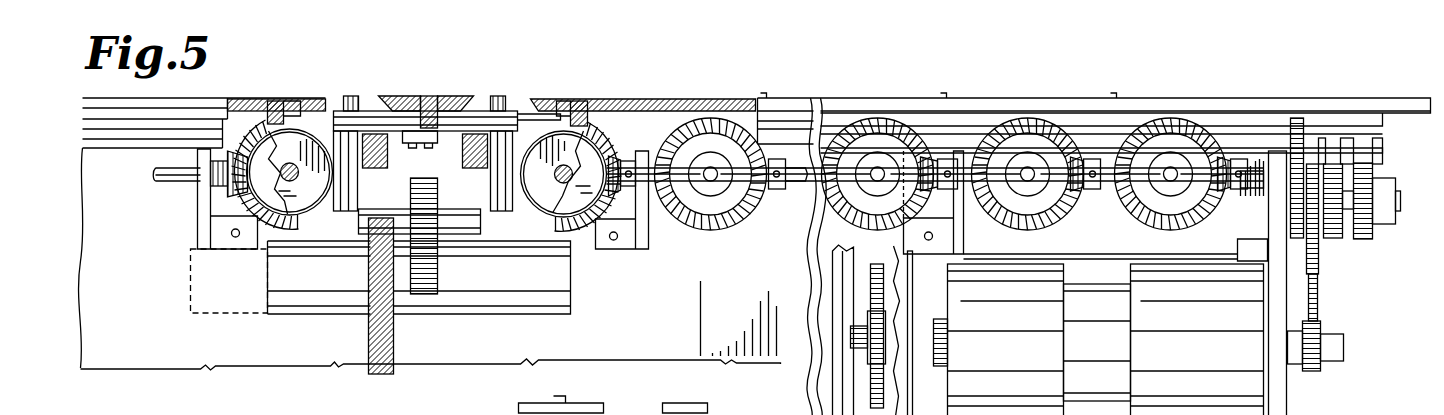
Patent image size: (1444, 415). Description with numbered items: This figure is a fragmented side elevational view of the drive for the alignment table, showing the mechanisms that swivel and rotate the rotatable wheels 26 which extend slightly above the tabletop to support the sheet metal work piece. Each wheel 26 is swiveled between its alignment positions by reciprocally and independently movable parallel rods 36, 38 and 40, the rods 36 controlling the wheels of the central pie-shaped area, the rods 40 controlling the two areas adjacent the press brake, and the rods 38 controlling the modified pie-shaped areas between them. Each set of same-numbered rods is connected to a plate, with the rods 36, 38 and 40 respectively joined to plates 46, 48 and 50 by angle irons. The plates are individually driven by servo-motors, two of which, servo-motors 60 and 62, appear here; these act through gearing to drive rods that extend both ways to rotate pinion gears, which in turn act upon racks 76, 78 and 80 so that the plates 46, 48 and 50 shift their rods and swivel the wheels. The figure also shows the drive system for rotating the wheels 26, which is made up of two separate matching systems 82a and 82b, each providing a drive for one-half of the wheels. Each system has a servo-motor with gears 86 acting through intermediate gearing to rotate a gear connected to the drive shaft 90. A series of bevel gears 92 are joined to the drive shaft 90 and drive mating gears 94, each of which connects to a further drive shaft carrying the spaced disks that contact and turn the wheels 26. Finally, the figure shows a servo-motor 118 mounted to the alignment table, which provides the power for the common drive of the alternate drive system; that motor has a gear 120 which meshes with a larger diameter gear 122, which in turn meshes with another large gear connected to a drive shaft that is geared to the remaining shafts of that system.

The rotatable wheel 26 is at (357, 102).
The parallel rod 36 is at (244, 106).
The parallel rod 38 is at (292, 104).
The parallel rod 40 is at (274, 108).
The plate 46 is at (100, 133).
The plate 48 is at (157, 122).
The plate 50 is at (128, 112).
The servo-motor 60 is at (513, 297).
The servo-motor 62 is at (313, 300).
The rack 76 is at (1317, 143).
The rack 78 is at (1335, 143).
The rack 80 is at (1367, 143).
The drive system 82a is at (580, 240).
The drive system 82b is at (228, 205).
The gears 86 is at (1313, 370).
The drive shaft 90 is at (182, 175).
The bevel gear 92 is at (205, 158).
The mating gear 94 is at (266, 232).
The servo-motor 118 is at (833, 287).
The gear 120 is at (880, 360).
The larger diameter gear 122 is at (877, 290).